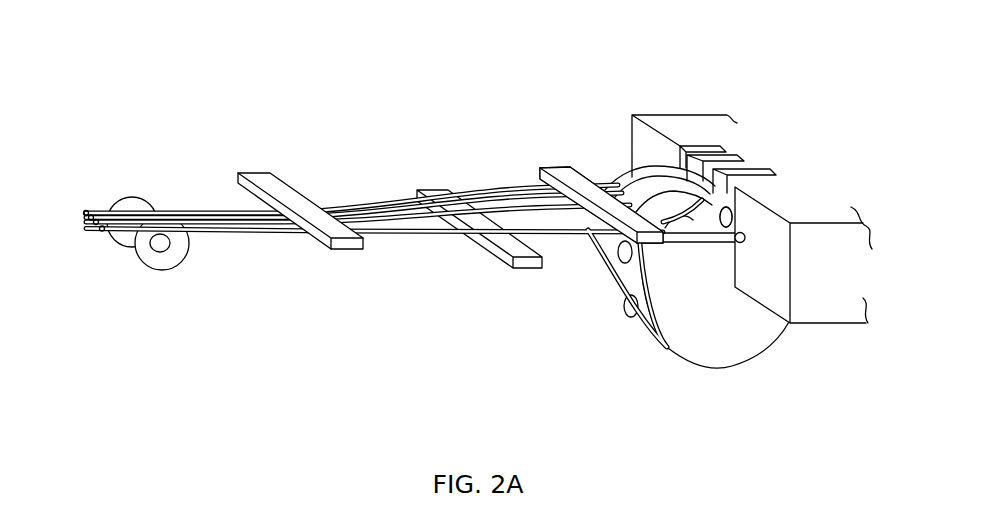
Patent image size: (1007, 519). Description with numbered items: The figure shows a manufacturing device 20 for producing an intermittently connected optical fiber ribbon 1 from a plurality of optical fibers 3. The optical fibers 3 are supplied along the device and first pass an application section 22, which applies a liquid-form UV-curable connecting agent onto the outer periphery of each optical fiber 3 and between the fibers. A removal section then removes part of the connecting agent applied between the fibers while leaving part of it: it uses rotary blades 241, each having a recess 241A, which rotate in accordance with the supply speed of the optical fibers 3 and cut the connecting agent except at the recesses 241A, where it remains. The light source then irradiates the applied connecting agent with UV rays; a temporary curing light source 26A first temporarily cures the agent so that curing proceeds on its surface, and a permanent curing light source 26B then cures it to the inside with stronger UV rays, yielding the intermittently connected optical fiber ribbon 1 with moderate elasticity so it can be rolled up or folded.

The intermittently connected optical fiber ribbon 1 is at (85, 250).
The optical fiber 3 is at (86, 212).
The manufacturing device 20 is at (472, 222).
The application section 22 is at (685, 125).
The rotary blade 241 is at (720, 344).
The recess 241A is at (623, 311).
The temporary curing light source 26A is at (500, 257).
The permanent curing light source 26B is at (350, 249).